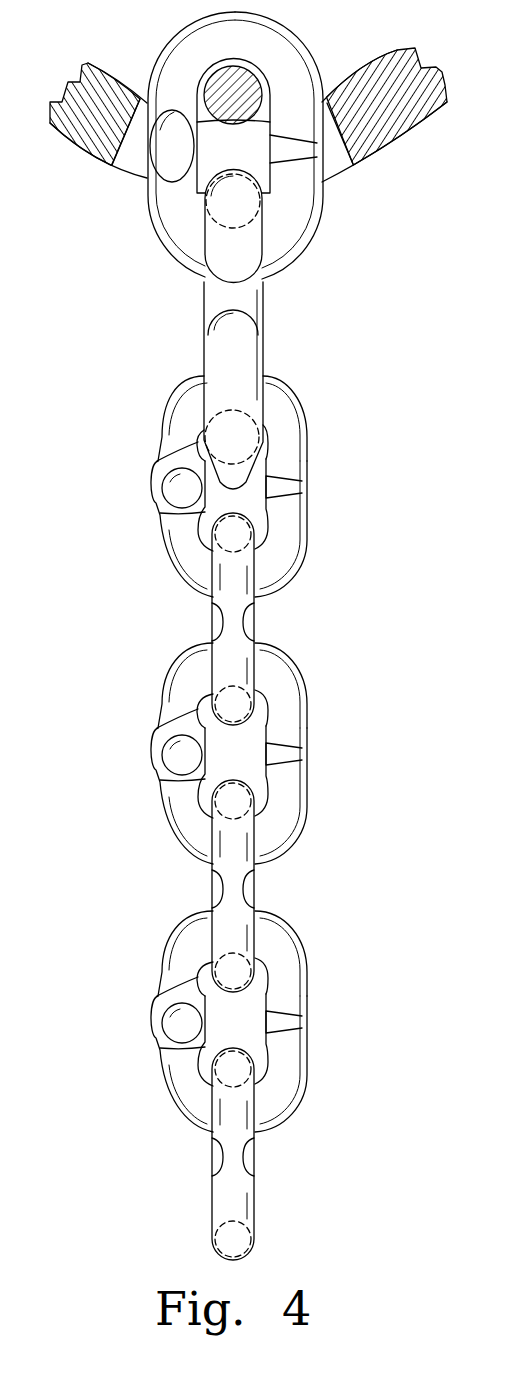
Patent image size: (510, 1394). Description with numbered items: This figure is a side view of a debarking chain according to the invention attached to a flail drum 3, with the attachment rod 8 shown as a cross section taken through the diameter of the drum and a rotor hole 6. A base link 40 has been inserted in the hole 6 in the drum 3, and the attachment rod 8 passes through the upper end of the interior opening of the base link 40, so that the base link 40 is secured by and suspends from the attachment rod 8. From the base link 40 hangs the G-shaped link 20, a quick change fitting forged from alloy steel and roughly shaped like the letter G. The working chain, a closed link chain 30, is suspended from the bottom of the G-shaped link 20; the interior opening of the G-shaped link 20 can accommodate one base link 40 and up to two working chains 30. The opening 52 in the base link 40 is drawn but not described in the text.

The drum 3 is at (388, 127).
The hole 6 is at (335, 160).
The attachment rod 8 is at (256, 72).
The G-shaped link 20 is at (247, 356).
The closed link chain 30 is at (336, 447).
The base link 40 is at (292, 230).
The opening 52 is at (207, 170).